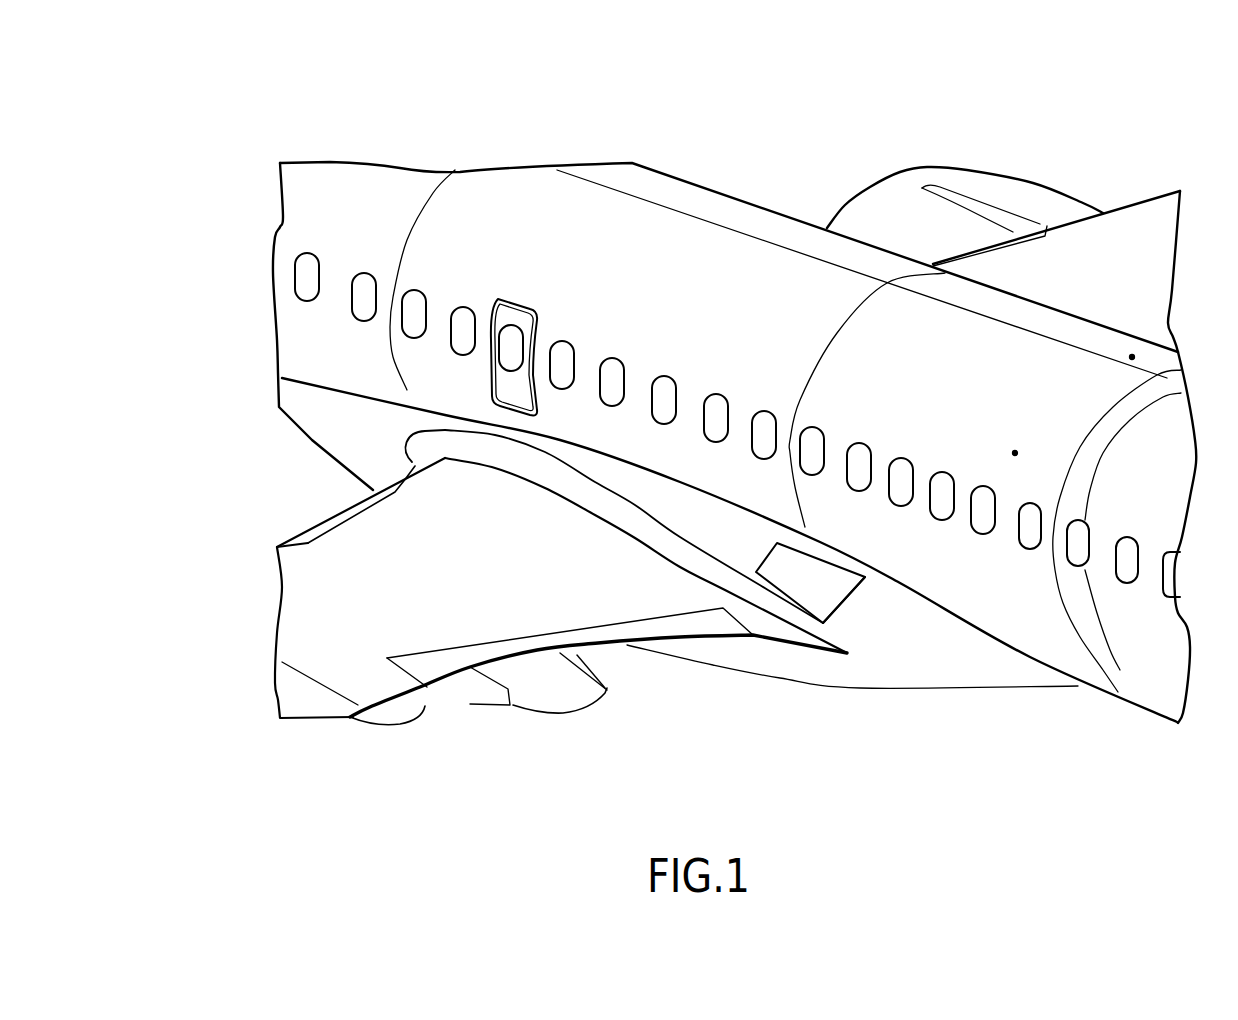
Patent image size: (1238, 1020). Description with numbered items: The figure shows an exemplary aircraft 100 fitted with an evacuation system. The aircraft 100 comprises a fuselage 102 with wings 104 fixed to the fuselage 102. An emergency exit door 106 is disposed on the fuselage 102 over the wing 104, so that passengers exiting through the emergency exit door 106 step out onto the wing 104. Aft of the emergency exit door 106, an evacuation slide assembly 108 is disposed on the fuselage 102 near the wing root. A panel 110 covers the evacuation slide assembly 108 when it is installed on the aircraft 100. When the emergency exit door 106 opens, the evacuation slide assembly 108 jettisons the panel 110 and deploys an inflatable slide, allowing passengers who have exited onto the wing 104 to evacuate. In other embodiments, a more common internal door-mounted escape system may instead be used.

The aircraft 100 is at (218, 148).
The fuselage 102 is at (303, 345).
The wing 104 is at (500, 565).
The emergency exit door 106 is at (505, 297).
The evacuation slide assembly 108 is at (843, 602).
The panel 110 is at (827, 600).